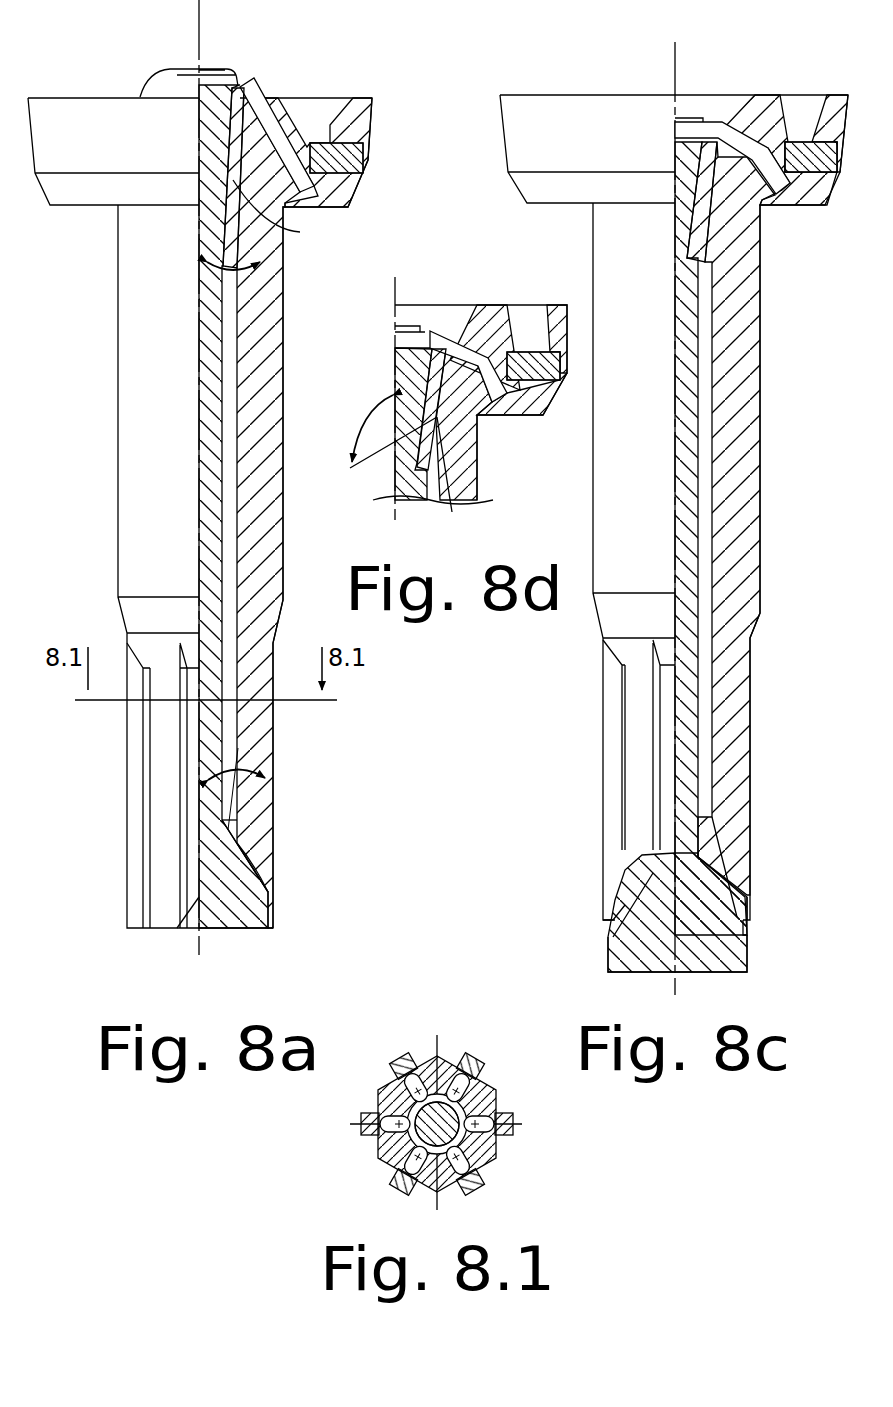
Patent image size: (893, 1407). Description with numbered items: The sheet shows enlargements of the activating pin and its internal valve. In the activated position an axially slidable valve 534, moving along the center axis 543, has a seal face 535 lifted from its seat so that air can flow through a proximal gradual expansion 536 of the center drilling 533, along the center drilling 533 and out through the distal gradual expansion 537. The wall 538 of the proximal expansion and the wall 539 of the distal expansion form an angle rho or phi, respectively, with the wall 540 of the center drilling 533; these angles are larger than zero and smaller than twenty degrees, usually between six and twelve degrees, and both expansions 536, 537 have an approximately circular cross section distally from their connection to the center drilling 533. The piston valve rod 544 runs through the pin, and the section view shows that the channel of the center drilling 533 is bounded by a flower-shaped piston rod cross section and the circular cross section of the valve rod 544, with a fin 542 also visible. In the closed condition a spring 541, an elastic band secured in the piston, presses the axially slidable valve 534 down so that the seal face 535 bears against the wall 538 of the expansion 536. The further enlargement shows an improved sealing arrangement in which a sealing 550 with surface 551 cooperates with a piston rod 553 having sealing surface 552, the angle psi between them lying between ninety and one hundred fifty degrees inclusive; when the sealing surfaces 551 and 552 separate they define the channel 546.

In FIG. 8.1, the center drilling 533 is at (410, 1075).
In FIG. 8a, the axially slidable valve 534 is at (220, 218).
In FIG. 8.1, the axially slidable valve 534 is at (440, 1150).
In FIG. 8a, the seal face 535 is at (250, 76).
In FIG. 8a, the proximal gradual expansion 536 is at (262, 200).
In FIG. 8a, the distal gradual expansion 537 is at (243, 830).
In FIG. 8a, the wall of the proximal expansion 538 is at (262, 246).
In FIG. 8a, the wall of the distal expansion 539 is at (262, 840).
In FIG. 8a, the wall of the center drilling 540 is at (238, 722).
In FIG. 8c, the spring 541 is at (728, 118).
In FIG. 8c, the fin 542 is at (735, 958).
In FIG. 8.1, the fin 542 is at (482, 1110).
In FIG. 8a, the center axis 543 is at (199, 16).
In FIG. 8a, the piston valve rod 544 is at (212, 312).
In FIG. 8d, the channel 546 is at (433, 521).
In FIG. 8d, the sealing 550 is at (423, 505).
In FIG. 8d, the sealing surface of the sealing 551 is at (425, 412).
In FIG. 8d, the sealing surface of the piston rod 552 is at (439, 422).
In FIG. 8d, the piston rod 553 is at (468, 477).